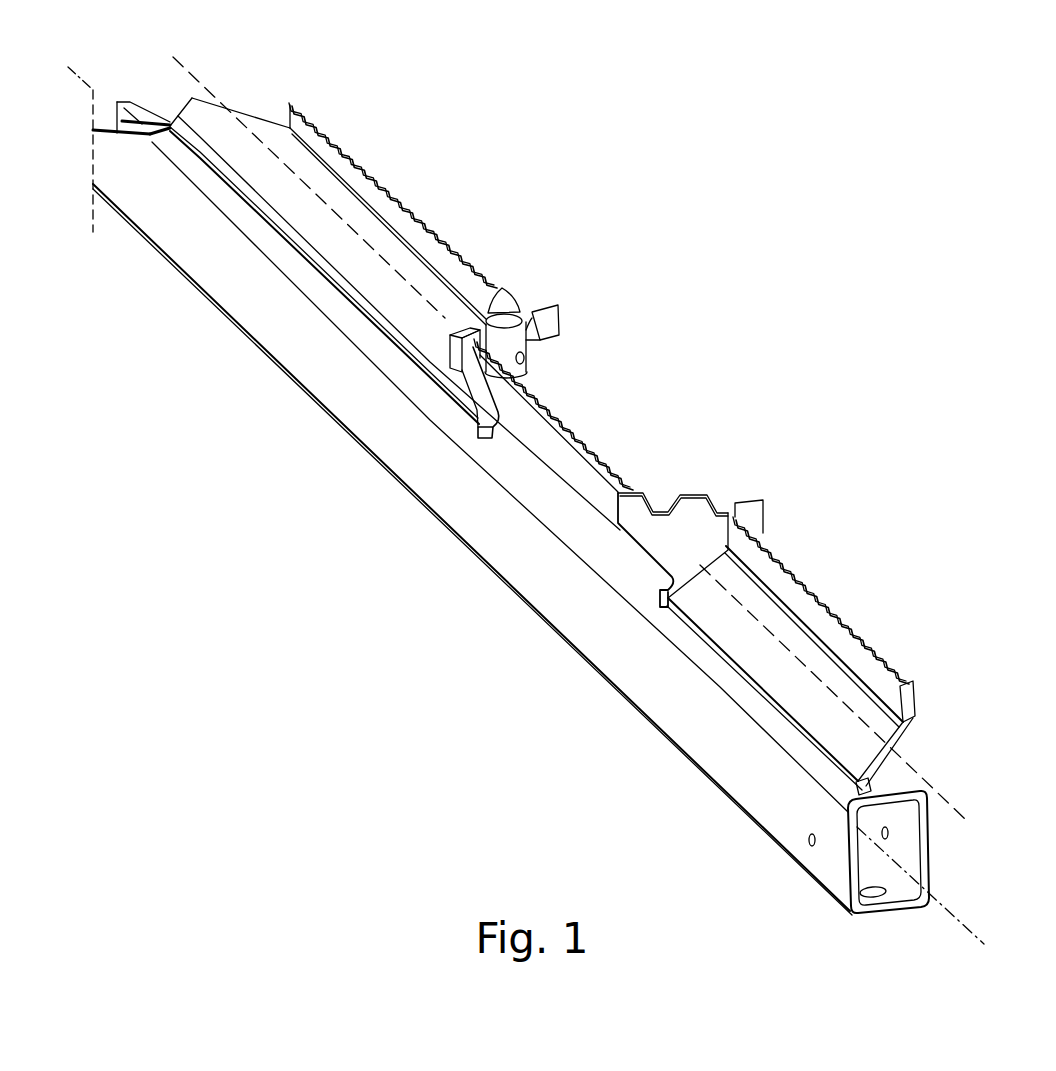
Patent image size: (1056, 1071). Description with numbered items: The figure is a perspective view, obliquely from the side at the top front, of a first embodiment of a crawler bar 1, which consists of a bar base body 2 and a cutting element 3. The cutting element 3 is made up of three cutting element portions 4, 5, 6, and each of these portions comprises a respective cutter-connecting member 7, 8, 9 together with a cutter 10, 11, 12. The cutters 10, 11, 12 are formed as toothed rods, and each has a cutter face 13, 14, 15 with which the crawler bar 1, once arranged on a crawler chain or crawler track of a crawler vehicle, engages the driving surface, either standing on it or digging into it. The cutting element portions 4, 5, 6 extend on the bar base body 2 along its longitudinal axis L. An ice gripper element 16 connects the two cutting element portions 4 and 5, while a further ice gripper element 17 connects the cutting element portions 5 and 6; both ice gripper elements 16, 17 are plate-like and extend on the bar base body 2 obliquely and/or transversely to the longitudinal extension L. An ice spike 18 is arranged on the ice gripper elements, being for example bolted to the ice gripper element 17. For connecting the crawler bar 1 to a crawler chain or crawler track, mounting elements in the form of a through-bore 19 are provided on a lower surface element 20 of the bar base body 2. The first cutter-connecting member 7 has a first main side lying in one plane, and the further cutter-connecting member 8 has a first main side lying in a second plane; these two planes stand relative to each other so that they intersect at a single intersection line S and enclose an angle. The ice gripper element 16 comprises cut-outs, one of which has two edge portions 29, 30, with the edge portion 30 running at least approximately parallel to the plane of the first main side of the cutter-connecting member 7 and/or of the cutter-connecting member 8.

The crawler bar 1 is at (912, 381).
The bar base body 2 is at (964, 808).
The cutting element 3 is at (907, 625).
The cutting element portion 4 is at (866, 604).
The cutting element portion 5 is at (674, 506).
The cutting element portion 6 is at (416, 194).
The cutter-connecting member 7 is at (682, 697).
The cutter-connecting member 8 is at (593, 434).
The cutter-connecting member 9 is at (317, 207).
The cutter 10 is at (915, 700).
The cutter 11 is at (560, 440).
The cutter 12 is at (313, 105).
The cutter face 13 is at (817, 589).
The cutter face 14 is at (612, 462).
The cutter face 15 is at (410, 185).
The ice gripper element 16 is at (757, 500).
The ice gripper element 17 is at (547, 305).
The ice spike 18 is at (530, 383).
The through-bore 19 is at (860, 891).
The lower surface element 20 is at (882, 908).
The edge portion 29 is at (630, 542).
The edge portion 30 is at (660, 593).
The intersection line S is at (581, 453).
The longitudinal axis L is at (534, 512).